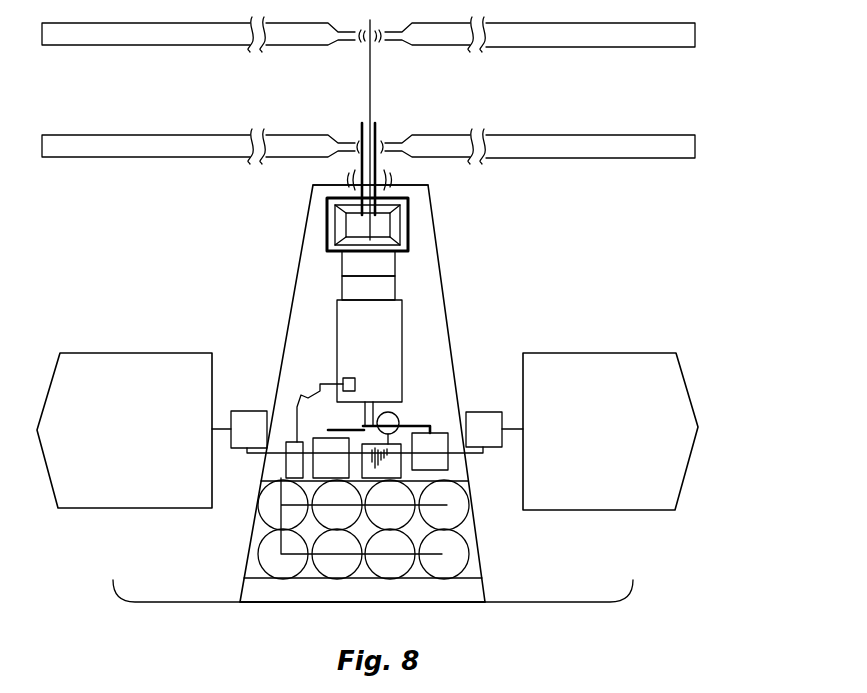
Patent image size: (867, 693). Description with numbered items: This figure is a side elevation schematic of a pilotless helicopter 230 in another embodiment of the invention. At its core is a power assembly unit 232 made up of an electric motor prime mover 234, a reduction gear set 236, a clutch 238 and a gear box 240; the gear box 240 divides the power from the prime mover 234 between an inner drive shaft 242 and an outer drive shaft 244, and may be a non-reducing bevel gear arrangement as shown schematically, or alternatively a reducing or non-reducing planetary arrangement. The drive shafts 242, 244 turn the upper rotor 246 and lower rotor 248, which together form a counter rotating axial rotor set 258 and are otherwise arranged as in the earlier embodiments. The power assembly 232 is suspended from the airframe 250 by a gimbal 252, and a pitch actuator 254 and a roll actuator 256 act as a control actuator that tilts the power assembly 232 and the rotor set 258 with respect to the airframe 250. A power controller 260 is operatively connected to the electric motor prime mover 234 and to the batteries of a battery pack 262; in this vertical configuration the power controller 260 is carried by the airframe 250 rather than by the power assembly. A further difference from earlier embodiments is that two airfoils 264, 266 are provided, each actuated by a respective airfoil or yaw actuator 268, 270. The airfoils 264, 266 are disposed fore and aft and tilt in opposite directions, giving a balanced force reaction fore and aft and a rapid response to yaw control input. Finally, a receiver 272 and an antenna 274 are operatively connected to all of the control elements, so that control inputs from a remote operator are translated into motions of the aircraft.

The pilotless helicopter 230 is at (688, 216).
The power assembly unit 232 is at (432, 313).
The electric motor prime mover 234 is at (349, 371).
The reduction gear set 236 is at (368, 288).
The clutch 238 is at (368, 263).
The gear box 240 is at (410, 212).
The inner drive shaft 242 is at (367, 90).
The outer drive shaft 244 is at (378, 163).
The upper rotor 246 is at (565, 58).
The lower rotor 248 is at (565, 129).
The airframe 250 is at (439, 262).
The gimbal 252 is at (360, 168).
The pitch actuator 254 is at (427, 445).
The roll actuator 256 is at (330, 450).
The counter rotating axial rotor set 258 is at (482, 118).
The power controller 260 is at (290, 465).
The battery pack 262 is at (233, 553).
The airfoil 264 is at (595, 510).
The airfoil 266 is at (122, 508).
The airfoil or yaw actuator 268 is at (485, 424).
The airfoil or yaw actuator 270 is at (250, 428).
The receiver 272 is at (388, 471).
The antenna 274 is at (396, 416).